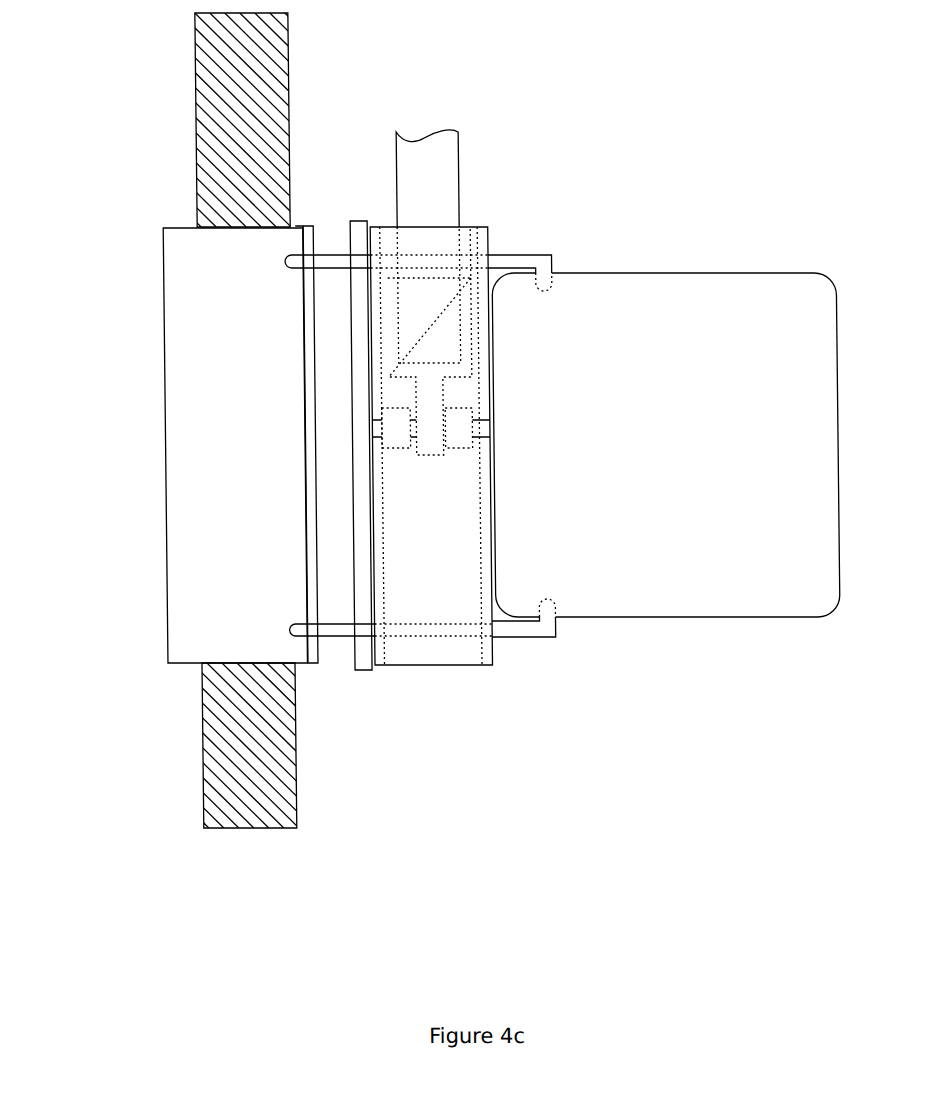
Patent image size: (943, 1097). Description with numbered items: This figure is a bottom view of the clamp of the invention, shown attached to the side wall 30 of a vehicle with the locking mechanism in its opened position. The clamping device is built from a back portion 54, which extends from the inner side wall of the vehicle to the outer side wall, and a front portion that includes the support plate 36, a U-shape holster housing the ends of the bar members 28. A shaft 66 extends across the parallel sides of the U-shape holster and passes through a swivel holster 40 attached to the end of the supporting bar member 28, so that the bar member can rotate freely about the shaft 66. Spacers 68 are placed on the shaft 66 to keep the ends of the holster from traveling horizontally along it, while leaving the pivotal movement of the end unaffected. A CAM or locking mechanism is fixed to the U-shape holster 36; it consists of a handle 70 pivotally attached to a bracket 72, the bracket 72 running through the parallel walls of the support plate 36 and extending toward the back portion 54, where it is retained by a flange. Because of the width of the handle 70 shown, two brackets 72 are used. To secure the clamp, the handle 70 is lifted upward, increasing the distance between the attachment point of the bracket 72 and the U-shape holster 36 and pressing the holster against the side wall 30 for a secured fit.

The bar member 28 is at (432, 165).
The side wall 30 is at (233, 735).
The support plate 36 is at (471, 647).
The swivel holster 40 is at (472, 277).
The back portion 54 is at (212, 437).
The shaft 66 is at (482, 427).
The spacers 68 is at (458, 447).
The handle 70 is at (800, 622).
The bracket 72 is at (513, 265).